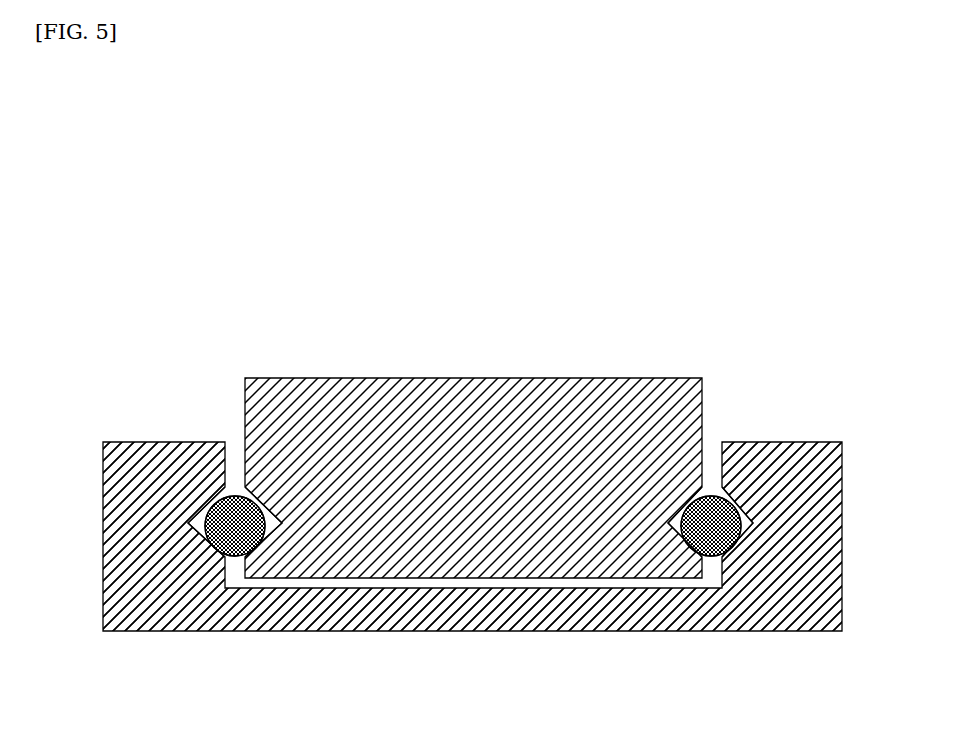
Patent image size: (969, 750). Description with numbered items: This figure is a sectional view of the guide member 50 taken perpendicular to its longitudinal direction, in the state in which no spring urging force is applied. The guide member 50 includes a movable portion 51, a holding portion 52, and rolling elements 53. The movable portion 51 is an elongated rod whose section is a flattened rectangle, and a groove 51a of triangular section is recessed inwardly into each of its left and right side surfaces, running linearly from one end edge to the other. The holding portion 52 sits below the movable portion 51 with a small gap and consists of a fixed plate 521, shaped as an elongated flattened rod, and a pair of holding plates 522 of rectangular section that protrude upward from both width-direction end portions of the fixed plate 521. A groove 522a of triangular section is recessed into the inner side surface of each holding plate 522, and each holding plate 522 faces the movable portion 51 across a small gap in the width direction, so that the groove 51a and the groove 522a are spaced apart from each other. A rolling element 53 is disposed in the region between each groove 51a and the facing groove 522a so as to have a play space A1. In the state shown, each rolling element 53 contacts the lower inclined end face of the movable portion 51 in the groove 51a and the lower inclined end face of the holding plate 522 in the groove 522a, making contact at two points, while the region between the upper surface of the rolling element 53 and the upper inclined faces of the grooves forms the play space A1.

The guide member 50 is at (643, 327).
The movable portion 51 is at (370, 377).
The groove 51a is at (260, 497).
The holding portion 52 is at (501, 633).
The fixed plate 521 is at (360, 632).
The holding plate 522 is at (125, 442).
The groove 522a is at (199, 508).
The rolling element 53 is at (233, 557).
The play space A1 is at (237, 494).